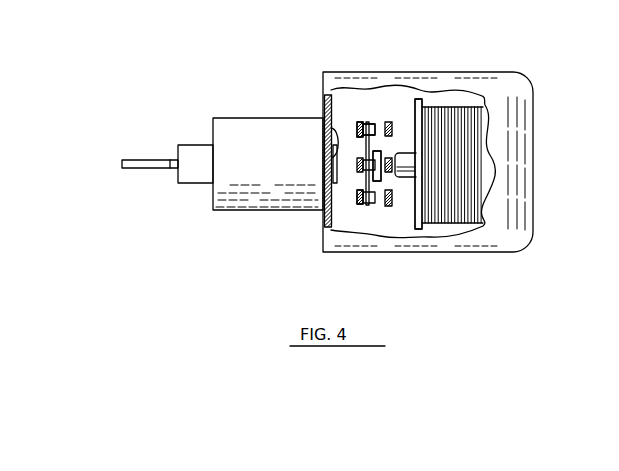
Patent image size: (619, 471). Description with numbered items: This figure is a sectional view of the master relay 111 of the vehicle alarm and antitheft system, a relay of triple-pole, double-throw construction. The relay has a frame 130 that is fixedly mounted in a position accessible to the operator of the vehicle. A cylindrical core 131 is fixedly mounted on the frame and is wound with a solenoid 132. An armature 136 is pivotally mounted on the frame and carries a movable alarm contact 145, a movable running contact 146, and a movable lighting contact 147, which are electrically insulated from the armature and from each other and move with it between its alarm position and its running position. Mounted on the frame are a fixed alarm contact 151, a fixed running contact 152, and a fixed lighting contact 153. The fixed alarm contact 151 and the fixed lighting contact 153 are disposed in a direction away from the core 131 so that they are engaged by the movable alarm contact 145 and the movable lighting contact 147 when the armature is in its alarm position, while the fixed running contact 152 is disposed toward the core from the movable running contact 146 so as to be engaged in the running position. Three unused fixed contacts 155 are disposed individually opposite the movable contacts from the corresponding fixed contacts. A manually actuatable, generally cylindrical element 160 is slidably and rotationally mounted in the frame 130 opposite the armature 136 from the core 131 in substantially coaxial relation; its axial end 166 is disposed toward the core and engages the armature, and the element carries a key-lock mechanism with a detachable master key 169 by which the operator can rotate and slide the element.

The master relay 111 is at (518, 66).
The frame 130 is at (322, 243).
The cylindrical core 131 is at (410, 167).
The solenoid 132 is at (468, 135).
The armature 136 is at (378, 182).
The movable alarm contact 145 is at (368, 205).
The movable running contact 146 is at (373, 158).
The movable lighting contact 147 is at (357, 122).
The fixed alarm contact 151 is at (357, 197).
The fixed running contact 152 is at (388, 156).
The fixed lighting contact 153 is at (357, 128).
The unused fixed contacts 155 is at (357, 163).
The manually actuatable cylindrical element 160 is at (195, 185).
The axial end 166 is at (328, 123).
The master key 169 is at (146, 169).